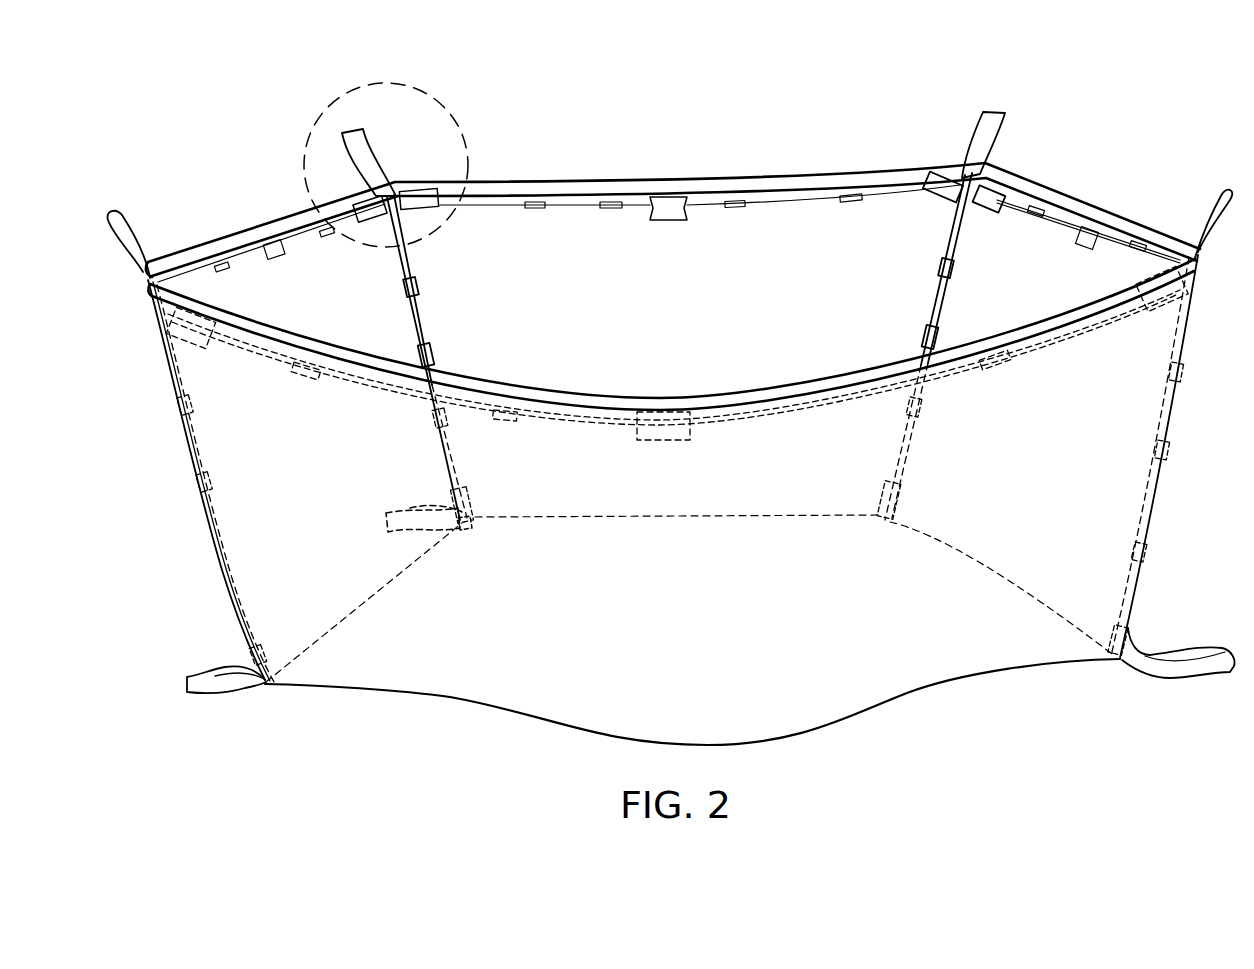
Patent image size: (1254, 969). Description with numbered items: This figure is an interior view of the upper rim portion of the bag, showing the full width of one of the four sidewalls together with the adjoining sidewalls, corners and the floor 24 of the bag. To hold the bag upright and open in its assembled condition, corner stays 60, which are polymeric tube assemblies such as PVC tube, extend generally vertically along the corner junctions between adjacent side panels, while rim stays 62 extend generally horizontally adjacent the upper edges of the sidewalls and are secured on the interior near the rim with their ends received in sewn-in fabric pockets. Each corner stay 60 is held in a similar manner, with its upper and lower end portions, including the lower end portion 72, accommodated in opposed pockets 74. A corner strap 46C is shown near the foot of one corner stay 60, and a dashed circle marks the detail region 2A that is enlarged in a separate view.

The detail region of FIG. 2A is at (468, 141).
The floor panel 24 is at (533, 688).
The corner strap 46C is at (415, 510).
The corner stay 60 is at (430, 311).
The rim stay 62 is at (758, 224).
The lower end portion 72 is at (473, 528).
The pocket 74 is at (393, 203).